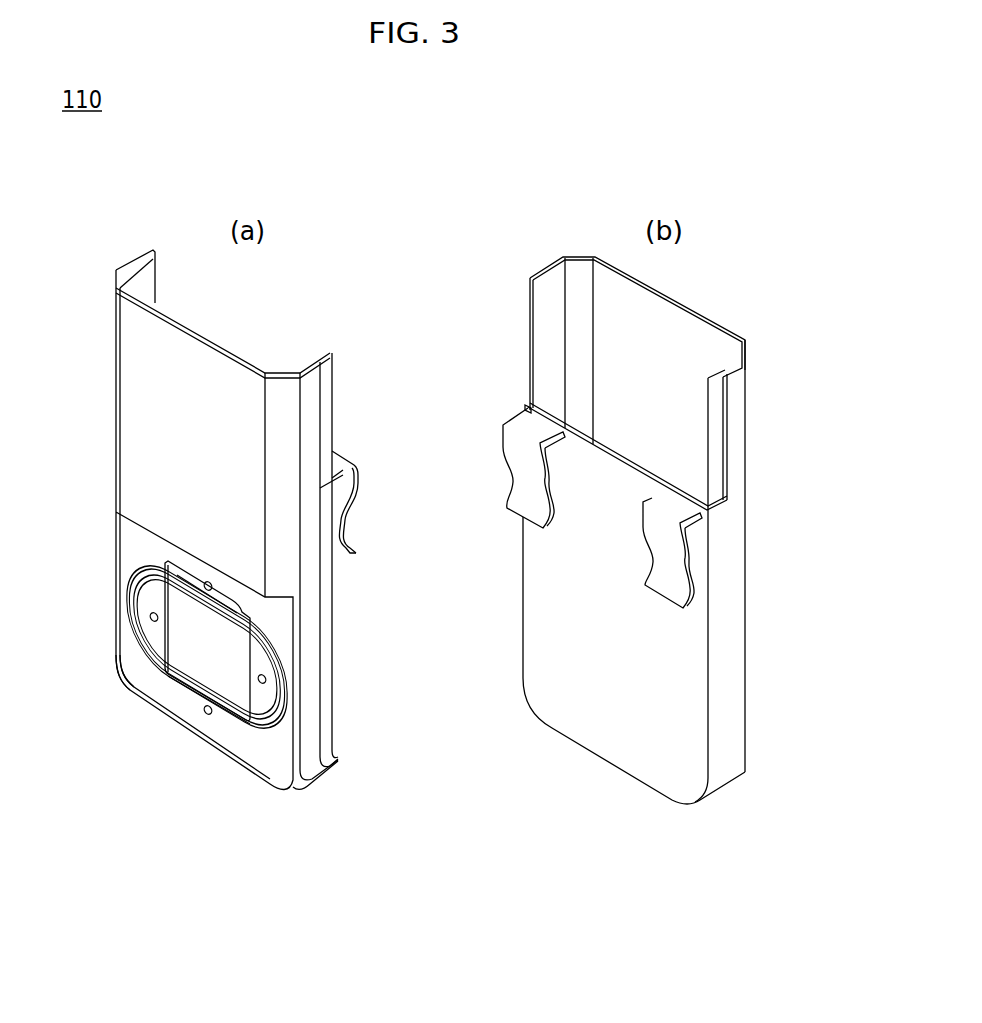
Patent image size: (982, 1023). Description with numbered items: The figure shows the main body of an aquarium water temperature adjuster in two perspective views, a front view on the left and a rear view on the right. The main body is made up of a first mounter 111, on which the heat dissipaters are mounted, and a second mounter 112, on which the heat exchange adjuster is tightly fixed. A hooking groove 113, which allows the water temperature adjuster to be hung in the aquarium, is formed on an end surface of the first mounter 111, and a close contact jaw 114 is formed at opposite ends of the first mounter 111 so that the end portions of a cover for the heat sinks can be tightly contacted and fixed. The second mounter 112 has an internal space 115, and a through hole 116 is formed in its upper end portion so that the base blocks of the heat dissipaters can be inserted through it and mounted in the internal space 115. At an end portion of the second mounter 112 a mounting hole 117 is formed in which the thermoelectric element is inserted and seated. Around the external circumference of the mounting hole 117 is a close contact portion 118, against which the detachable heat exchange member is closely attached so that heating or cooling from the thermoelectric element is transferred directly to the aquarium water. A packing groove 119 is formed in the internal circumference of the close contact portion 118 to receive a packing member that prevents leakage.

The first mounter 111 is at (630, 338).
The second mounter 112 is at (340, 648).
The hooking groove 113 is at (513, 472).
The close contact jaw 114 is at (330, 401).
The internal space 115 is at (190, 633).
The through hole 116 is at (602, 447).
The mounting hole 117 is at (198, 692).
The close contact portion 118 is at (127, 672).
The packing groove 119 is at (235, 742).